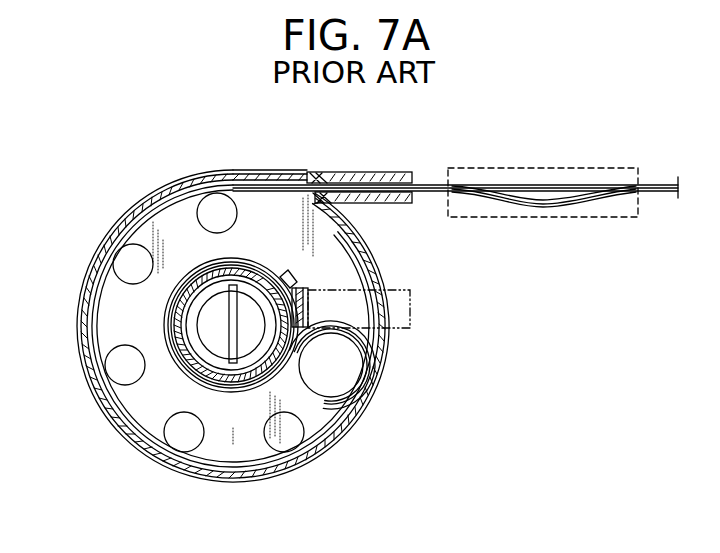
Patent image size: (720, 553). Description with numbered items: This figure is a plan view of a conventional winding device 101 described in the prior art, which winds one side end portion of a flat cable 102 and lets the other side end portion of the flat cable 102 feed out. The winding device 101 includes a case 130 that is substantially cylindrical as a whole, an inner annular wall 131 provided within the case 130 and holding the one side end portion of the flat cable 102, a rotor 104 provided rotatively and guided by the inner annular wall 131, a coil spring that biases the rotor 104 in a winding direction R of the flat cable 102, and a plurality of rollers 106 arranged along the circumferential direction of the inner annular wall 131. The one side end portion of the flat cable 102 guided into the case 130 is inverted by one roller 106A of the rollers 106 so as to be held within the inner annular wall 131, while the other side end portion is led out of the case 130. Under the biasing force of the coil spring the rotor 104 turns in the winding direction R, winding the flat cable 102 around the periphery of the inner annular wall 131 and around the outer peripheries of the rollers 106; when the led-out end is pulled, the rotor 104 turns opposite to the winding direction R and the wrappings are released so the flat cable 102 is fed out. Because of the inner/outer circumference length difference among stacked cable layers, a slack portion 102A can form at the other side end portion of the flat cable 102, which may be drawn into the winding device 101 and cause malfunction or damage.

The winding device 101 is at (410, 157).
The flat cable 102 is at (645, 183).
The slack portion 102A is at (558, 168).
The rotor 104 is at (330, 403).
The rollers 106 is at (118, 288).
The roller 106A is at (336, 397).
The case 130 is at (385, 371).
The inner annular wall 131 is at (247, 308).
The winding direction R is at (407, 471).